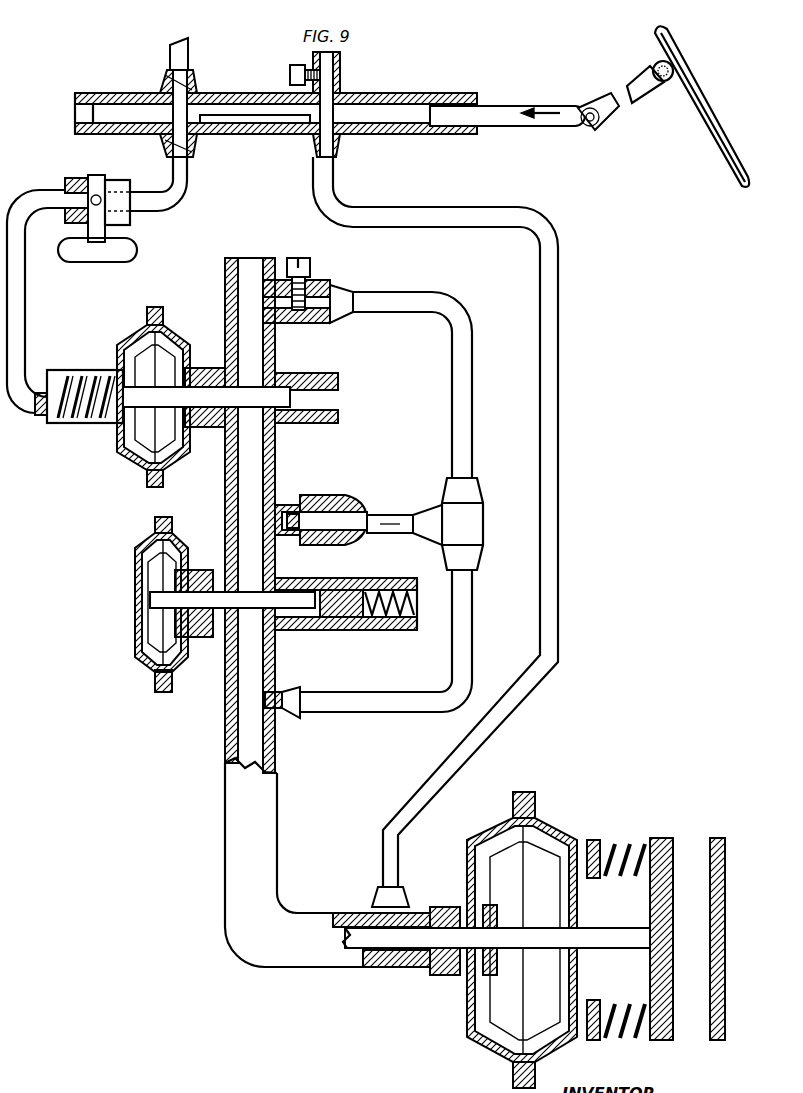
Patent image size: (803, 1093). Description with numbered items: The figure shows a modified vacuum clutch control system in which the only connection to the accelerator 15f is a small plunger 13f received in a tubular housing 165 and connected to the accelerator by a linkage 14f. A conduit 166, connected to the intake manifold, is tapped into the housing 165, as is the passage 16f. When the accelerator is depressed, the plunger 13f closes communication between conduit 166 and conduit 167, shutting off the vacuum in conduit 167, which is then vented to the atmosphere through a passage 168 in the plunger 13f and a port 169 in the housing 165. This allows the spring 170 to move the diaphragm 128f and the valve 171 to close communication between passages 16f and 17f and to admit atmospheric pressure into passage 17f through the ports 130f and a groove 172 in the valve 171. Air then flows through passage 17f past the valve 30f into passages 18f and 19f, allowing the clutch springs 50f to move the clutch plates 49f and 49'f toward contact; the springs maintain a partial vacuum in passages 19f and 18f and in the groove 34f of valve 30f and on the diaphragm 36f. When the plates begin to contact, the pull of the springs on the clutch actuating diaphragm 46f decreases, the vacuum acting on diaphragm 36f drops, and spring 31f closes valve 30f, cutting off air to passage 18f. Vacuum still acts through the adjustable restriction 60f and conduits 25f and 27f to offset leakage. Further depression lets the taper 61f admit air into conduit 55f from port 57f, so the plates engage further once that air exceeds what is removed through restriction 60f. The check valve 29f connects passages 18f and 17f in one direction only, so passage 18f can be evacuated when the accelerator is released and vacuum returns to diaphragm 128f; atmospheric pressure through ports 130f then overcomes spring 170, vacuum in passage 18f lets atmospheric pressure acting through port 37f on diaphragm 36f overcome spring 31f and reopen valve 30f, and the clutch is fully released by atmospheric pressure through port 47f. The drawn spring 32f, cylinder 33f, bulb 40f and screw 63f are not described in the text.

The plunger 13f is at (540, 106).
The linkage 14f is at (612, 122).
The accelerator 15f is at (655, 38).
The passage 16f is at (250, 280).
The passage 17f is at (253, 440).
The passage 18f is at (257, 660).
The passage 19f is at (379, 948).
The conduit 25f is at (473, 323).
The conduit 27f is at (473, 608).
The check valve 29f is at (317, 505).
The valve 30f is at (283, 600).
The spring 31f is at (328, 590).
The spring 32f is at (418, 590).
The cylinder 33f is at (283, 630).
The groove 34f is at (214, 633).
The diaphragm 36f is at (170, 537).
The port 37f is at (135, 598).
The thermostatic bulb 40f is at (133, 252).
The clutch actuating diaphragm 46f is at (522, 830).
The port 47f is at (577, 925).
The clutch plate 49f is at (667, 838).
The clutch plate 49'f is at (718, 911).
The clutch springs 50f is at (618, 842).
The conduit 55f is at (558, 233).
The port 57f is at (326, 97).
The adjustable restriction 60f is at (312, 261).
The taper 61f is at (413, 134).
The screw 63f is at (304, 66).
The diaphragm 128f is at (147, 333).
The ports 130f is at (193, 355).
The tubular housing 165 is at (237, 93).
The conduit 166 is at (170, 42).
The conduit 167 is at (182, 182).
The passage 168 is at (260, 130).
The port 169 is at (207, 128).
The spring 170 is at (68, 372).
The valve 171 is at (279, 392).
The groove 172 is at (212, 430).